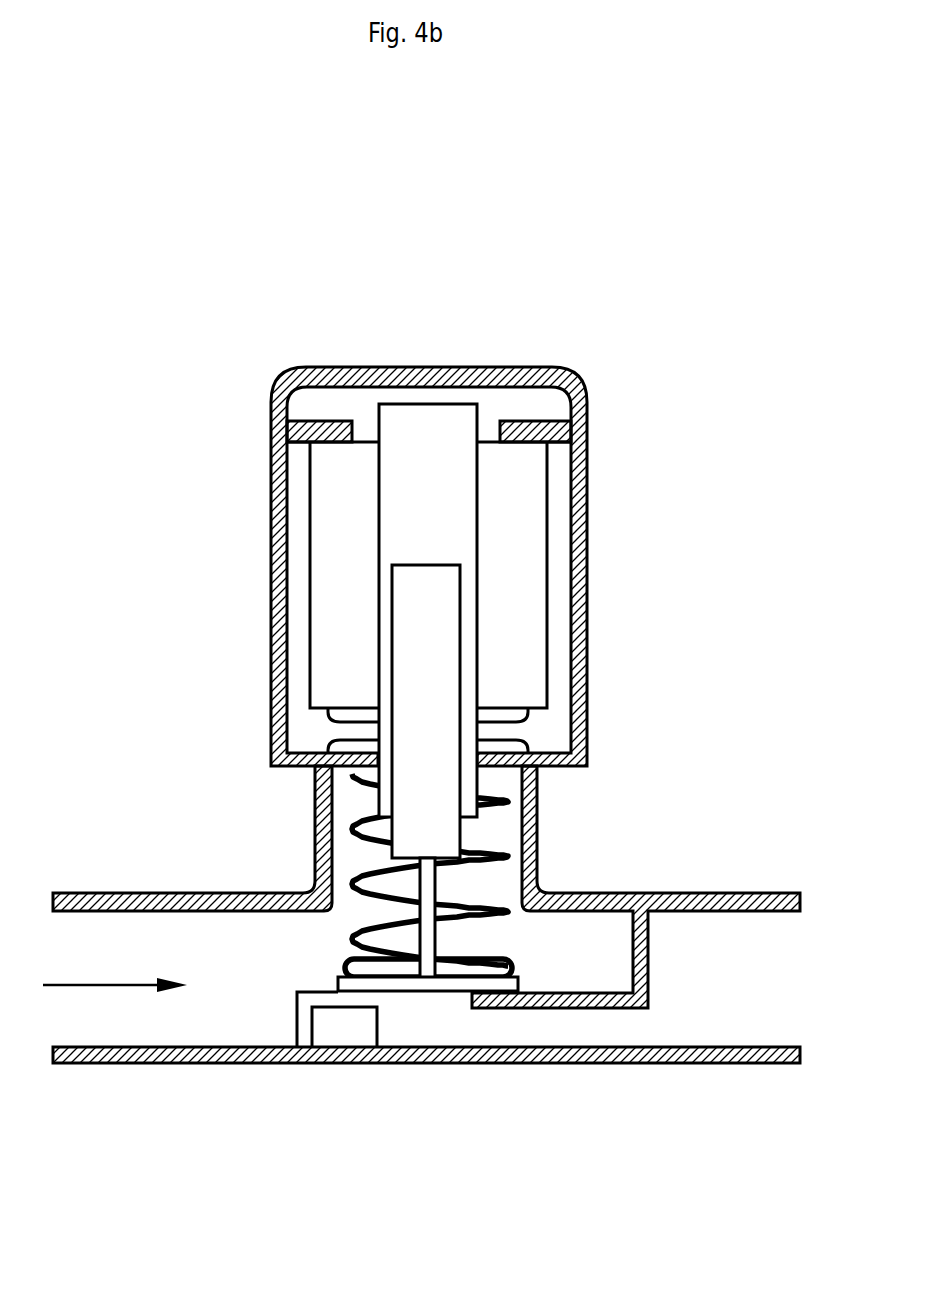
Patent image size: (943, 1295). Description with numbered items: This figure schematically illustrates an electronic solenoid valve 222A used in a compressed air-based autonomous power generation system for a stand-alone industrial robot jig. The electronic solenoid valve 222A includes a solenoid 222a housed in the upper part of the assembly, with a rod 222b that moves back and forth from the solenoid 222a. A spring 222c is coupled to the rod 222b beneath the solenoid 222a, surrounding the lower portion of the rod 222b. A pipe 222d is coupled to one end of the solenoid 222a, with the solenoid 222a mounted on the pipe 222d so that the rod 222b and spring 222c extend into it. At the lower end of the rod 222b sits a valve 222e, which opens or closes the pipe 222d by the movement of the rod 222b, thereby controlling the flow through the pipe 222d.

The electronic solenoid valve 222A is at (630, 314).
The solenoid 222a is at (522, 493).
The rod 222b is at (405, 602).
The spring 222c is at (495, 853).
The pipe 222d is at (148, 1050).
The valve 222e is at (433, 990).